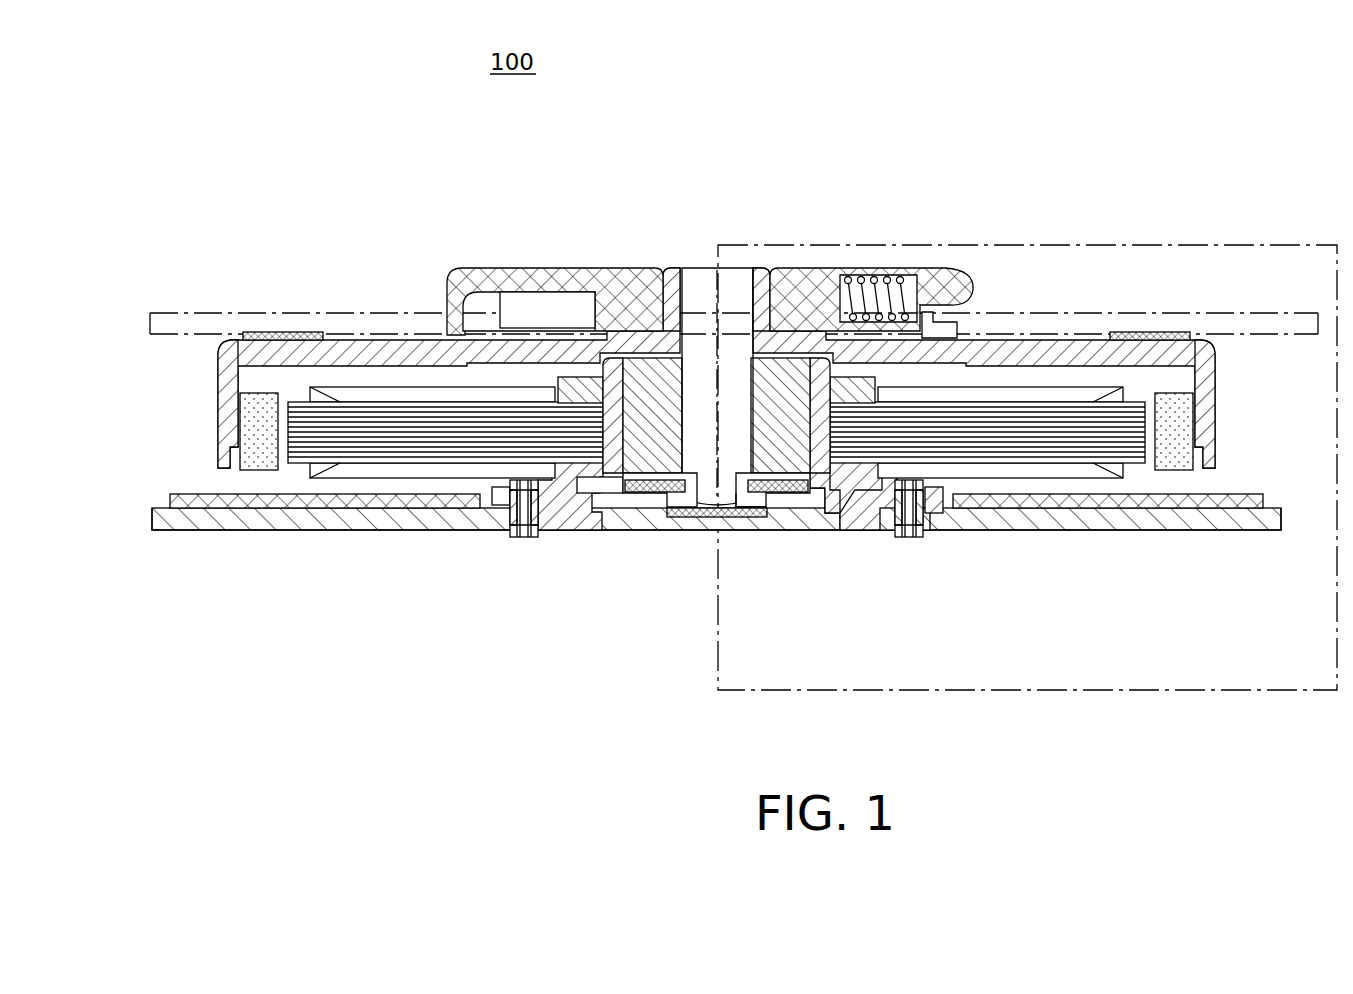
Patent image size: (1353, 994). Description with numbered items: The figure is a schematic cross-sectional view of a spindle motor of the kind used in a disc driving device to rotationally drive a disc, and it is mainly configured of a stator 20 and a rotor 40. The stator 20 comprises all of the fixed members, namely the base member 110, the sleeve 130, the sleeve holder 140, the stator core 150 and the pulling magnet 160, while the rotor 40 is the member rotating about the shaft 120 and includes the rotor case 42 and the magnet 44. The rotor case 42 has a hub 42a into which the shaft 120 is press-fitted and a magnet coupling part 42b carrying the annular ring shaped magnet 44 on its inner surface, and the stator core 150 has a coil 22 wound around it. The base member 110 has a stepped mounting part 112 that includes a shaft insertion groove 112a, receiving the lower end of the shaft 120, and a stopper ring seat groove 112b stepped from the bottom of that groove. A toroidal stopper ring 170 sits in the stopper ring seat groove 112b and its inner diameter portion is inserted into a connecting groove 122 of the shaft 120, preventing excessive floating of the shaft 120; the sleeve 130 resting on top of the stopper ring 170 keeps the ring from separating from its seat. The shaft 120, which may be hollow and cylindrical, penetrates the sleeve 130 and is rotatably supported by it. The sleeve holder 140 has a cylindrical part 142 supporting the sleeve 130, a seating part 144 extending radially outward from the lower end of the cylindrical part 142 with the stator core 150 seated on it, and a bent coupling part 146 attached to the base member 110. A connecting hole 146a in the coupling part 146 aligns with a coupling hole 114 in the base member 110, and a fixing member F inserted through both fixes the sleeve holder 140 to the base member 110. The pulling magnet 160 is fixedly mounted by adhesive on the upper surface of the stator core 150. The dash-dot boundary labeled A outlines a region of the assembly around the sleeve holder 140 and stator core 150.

The stator 20 is at (218, 548).
The coil 22 is at (387, 470).
The rotor 40 is at (438, 278).
The rotor case 42 is at (353, 352).
The hub 42a is at (662, 298).
The magnet coupling part 42b is at (227, 395).
The magnet 44 is at (248, 443).
The base member 110 is at (310, 527).
The mounting part 112 is at (650, 522).
The shaft insertion groove 112a is at (740, 505).
The stopper ring seat groove 112b is at (785, 493).
The coupling hole 114 is at (887, 514).
The shaft 120 is at (708, 482).
The connecting groove 122 is at (692, 514).
The sleeve 130 is at (778, 385).
The sleeve holder 140 is at (1013, 642).
The cylindrical part 142 is at (855, 492).
The seating part 144 is at (830, 485).
The coupling part 146 is at (960, 514).
The connecting hole 146a is at (930, 514).
The stator core 150 is at (893, 417).
The pulling magnet 160 is at (873, 282).
The stopper ring 170 is at (621, 488).
The region A is at (1130, 247).
The fixing member F is at (497, 509).